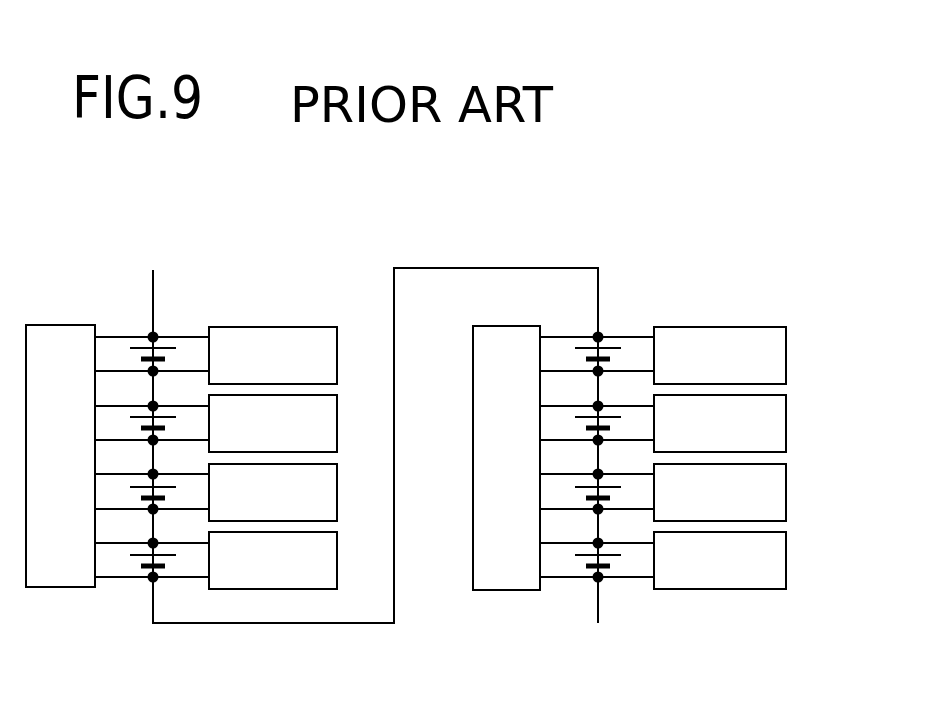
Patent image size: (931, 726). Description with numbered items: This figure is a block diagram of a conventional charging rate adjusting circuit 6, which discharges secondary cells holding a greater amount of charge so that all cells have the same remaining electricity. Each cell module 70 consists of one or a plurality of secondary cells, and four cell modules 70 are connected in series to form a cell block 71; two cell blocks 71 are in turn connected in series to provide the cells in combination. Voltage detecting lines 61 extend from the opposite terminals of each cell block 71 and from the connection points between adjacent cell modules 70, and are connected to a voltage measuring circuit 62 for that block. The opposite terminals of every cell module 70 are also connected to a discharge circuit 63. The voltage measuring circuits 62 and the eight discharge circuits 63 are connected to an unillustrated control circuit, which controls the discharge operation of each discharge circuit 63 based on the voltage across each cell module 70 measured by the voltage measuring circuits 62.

The charging rate adjusting circuit 6 is at (345, 190).
The voltage detecting lines 61 is at (108, 336).
The voltage measuring circuit 62 is at (48, 325).
The discharge circuit 63 is at (337, 352).
The cell module 70 is at (172, 357).
The cell block 71 is at (175, 275).